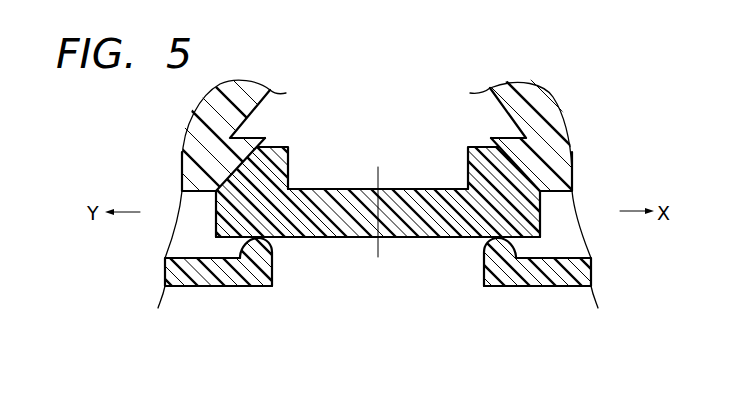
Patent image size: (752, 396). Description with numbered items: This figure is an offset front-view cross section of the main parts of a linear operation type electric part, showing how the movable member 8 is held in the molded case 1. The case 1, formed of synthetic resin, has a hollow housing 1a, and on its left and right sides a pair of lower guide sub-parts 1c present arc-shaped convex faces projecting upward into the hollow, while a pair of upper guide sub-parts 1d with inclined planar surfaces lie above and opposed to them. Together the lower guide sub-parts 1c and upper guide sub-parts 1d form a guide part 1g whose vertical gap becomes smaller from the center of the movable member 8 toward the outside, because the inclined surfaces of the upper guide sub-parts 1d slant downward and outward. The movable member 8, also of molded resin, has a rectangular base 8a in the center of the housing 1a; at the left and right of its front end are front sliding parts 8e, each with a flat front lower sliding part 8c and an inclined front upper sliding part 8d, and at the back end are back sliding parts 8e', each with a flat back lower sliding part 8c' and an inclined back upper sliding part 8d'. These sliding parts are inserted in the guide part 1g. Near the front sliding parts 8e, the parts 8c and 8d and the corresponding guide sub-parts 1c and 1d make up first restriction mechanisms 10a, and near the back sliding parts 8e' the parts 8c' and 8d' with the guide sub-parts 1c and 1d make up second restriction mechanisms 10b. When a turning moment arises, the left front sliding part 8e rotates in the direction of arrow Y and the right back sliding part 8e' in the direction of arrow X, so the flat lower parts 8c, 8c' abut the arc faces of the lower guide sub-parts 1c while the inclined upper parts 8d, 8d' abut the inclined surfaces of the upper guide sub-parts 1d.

The molded case 1 is at (556, 88).
The hollow housing 1a is at (410, 123).
The lower guide sub-parts 1c is at (248, 278).
The upper guide sub-parts 1d is at (205, 150).
The guide part 1g is at (204, 240).
The movable member 8 is at (342, 250).
The rectangular base 8a is at (406, 226).
The front lower sliding part 8c is at (302, 240).
The back lower sliding part 8c' is at (459, 280).
The front upper sliding part 8d is at (226, 200).
The back upper sliding part 8d' is at (588, 187).
The front sliding parts 8e is at (288, 165).
The back sliding parts 8e' is at (460, 162).
The first restriction mechanisms 10a is at (282, 125).
The second restriction mechanisms 10b is at (481, 110).